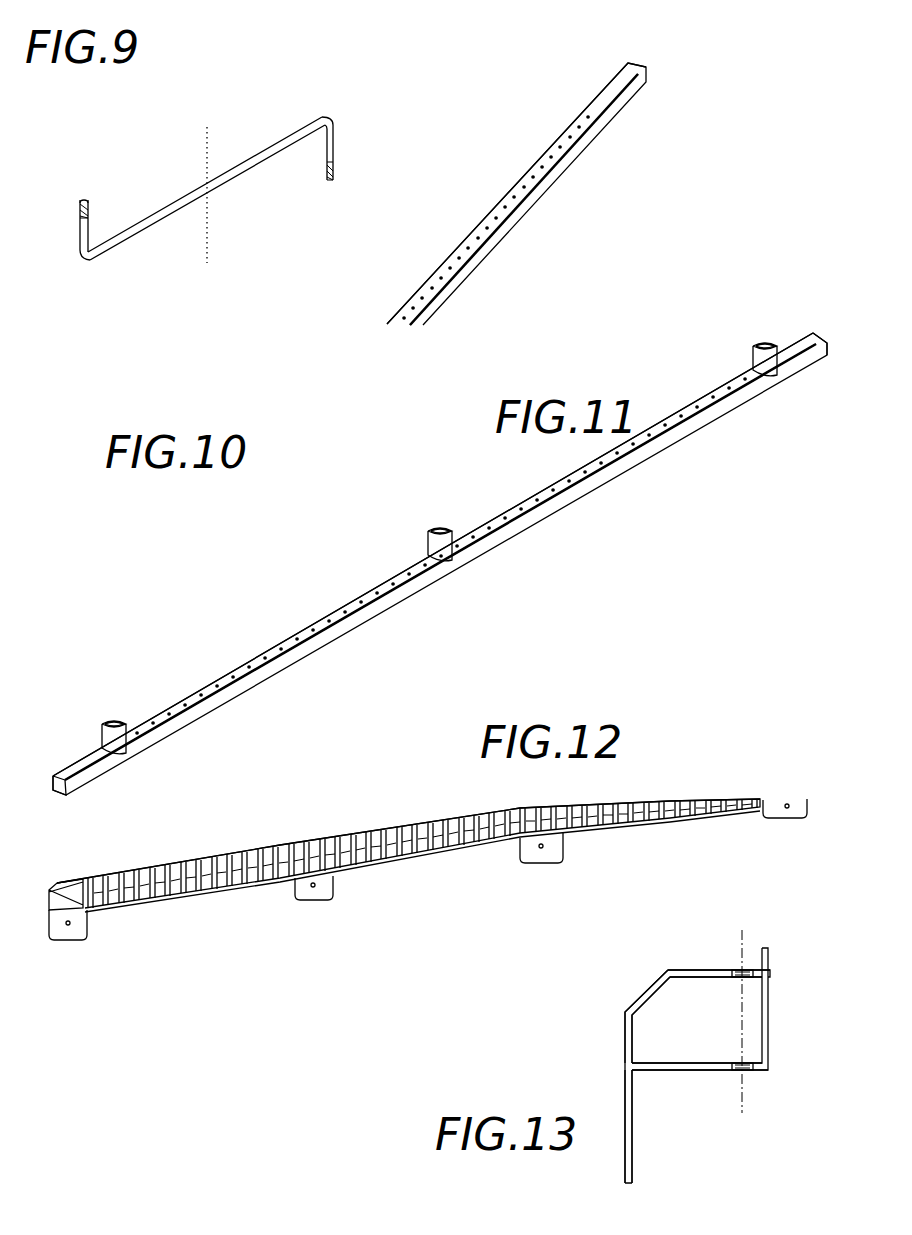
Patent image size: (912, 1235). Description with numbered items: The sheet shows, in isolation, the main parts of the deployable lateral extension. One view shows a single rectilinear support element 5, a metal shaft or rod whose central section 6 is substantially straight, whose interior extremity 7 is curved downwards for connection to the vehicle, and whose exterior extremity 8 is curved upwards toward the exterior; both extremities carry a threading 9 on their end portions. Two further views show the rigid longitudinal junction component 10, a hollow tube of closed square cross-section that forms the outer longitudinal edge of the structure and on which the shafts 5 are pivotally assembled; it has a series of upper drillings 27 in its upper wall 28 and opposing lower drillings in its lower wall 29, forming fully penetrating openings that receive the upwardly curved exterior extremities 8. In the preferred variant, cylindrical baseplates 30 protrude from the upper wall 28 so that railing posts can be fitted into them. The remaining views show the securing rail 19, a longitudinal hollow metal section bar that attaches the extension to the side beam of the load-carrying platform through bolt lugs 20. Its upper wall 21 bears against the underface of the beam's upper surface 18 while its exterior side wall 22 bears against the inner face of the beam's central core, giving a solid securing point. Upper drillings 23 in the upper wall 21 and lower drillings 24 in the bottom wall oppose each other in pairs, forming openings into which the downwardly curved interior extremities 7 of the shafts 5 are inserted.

In FIG. 9, the rectilinear support element 5 is at (232, 236).
In FIG. 9, the central section 6 is at (222, 181).
In FIG. 9, the interior extremity 7 is at (335, 138).
In FIG. 9, the exterior extremity 8 is at (80, 239).
In FIG. 9, the threading 9 is at (80, 203).
In FIG. 10, the rigid longitudinal junction component 10 is at (441, 312).
In FIG. 11, the rigid longitudinal junction component 10 is at (609, 481).
In FIG. 10, the upper drillings 27 is at (558, 143).
In FIG. 11, the upper drillings 27 is at (694, 404).
In FIG. 10, the upper wall 28 is at (618, 83).
In FIG. 11, the upper wall 28 is at (806, 341).
In FIG. 11, the lower wall 29 is at (818, 364).
In FIG. 11, the baseplates 30 is at (758, 361).
In FIG. 13, the upper surface 18 is at (677, 1072).
In FIG. 12, the securing rail 19 is at (218, 906).
In FIG. 13, the securing rail 19 is at (778, 998).
In FIG. 12, the bolt lugs 20 is at (68, 936).
In FIG. 13, the bolt lugs 20 is at (631, 1127).
In FIG. 12, the upper wall 21 is at (303, 841).
In FIG. 13, the upper wall 21 is at (695, 967).
In FIG. 12, the exterior side wall 22 is at (55, 899).
In FIG. 13, the exterior side wall 22 is at (627, 1036).
In FIG. 13, the upper drillings 23 is at (745, 968).
In FIG. 13, the lower drillings 24 is at (747, 1072).